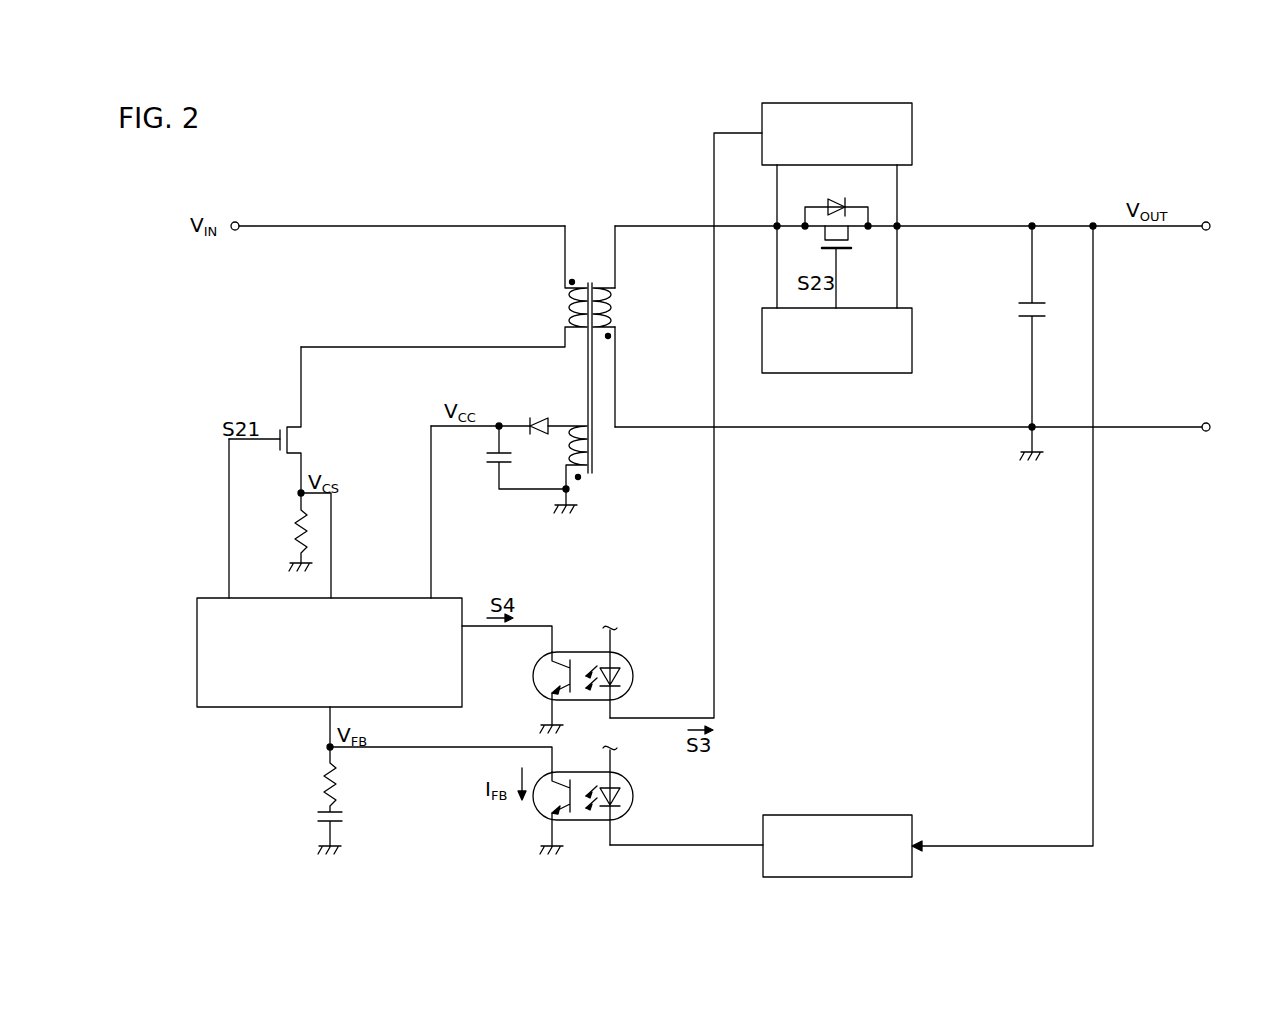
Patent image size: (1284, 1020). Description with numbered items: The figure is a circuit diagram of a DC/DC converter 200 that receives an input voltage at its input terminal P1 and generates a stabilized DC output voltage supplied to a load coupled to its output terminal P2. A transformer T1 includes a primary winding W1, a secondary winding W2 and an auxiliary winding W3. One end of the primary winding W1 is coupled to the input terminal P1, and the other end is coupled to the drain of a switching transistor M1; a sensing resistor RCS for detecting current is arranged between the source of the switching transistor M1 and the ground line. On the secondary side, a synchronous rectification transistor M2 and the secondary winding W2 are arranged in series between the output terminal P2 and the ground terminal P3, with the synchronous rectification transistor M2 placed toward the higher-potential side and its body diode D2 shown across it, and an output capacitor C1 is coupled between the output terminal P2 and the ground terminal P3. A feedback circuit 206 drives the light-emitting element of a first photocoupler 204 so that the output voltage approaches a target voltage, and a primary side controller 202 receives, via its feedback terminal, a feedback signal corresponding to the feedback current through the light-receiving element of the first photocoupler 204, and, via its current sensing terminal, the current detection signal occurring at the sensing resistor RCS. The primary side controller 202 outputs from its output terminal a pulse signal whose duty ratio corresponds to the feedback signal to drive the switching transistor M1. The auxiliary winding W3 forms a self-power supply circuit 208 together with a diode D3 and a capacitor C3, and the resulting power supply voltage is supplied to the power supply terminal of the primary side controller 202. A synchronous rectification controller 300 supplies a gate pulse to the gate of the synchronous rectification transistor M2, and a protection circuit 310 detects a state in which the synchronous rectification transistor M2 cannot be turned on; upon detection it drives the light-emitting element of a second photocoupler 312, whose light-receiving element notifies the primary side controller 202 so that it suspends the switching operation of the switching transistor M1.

The DC/DC converter 200 is at (1281, 123).
The primary side controller 202 is at (195, 647).
The first photocoupler 204 is at (584, 821).
The feedback circuit 206 is at (853, 814).
The self-power supply circuit 208 is at (526, 497).
The synchronous rectification controller 300 is at (851, 374).
The protection circuit 310 is at (915, 130).
The second photocoupler 312 is at (584, 651).
The input terminal P1 is at (235, 222).
The output terminal P2 is at (1206, 222).
The ground terminal P3 is at (1206, 431).
The transformer T1 is at (592, 276).
The primary winding W1 is at (560, 311).
The secondary winding W2 is at (620, 312).
The auxiliary winding W3 is at (578, 424).
The body diode D2 is at (838, 192).
The diode D3 is at (532, 424).
The output capacitor C1 is at (1015, 311).
The capacitor C3 is at (490, 460).
The switching transistor M1 is at (306, 430).
The synchronous rectification transistor M2 is at (846, 256).
The sensing resistor RCS is at (288, 529).